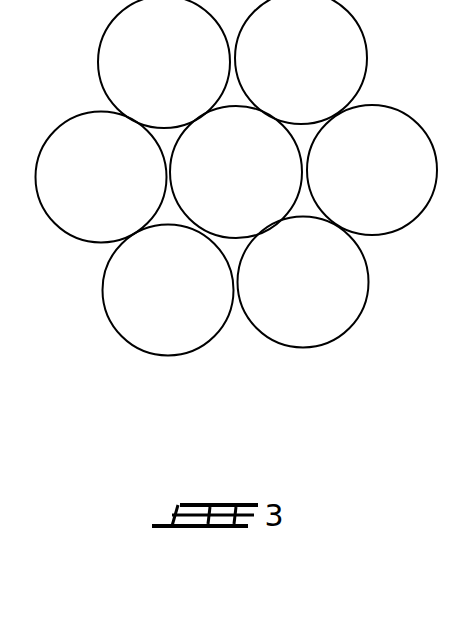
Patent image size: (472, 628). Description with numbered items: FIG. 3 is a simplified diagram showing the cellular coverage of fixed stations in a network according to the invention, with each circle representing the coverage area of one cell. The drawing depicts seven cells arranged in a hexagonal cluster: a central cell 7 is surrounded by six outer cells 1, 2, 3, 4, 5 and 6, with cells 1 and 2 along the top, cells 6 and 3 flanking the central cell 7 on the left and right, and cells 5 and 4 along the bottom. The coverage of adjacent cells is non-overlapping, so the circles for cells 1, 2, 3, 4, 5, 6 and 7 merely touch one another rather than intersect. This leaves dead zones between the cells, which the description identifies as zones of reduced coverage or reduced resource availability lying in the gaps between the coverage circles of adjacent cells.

The conductor strand 1 is at (164, 64).
The conductor strand 2 is at (301, 62).
The conductor strand 3 is at (372, 170).
The conductor strand 4 is at (303, 282).
The conductor strand 5 is at (168, 290).
The conductor strand 6 is at (101, 177).
The central conductor strand 7 is at (236, 172).